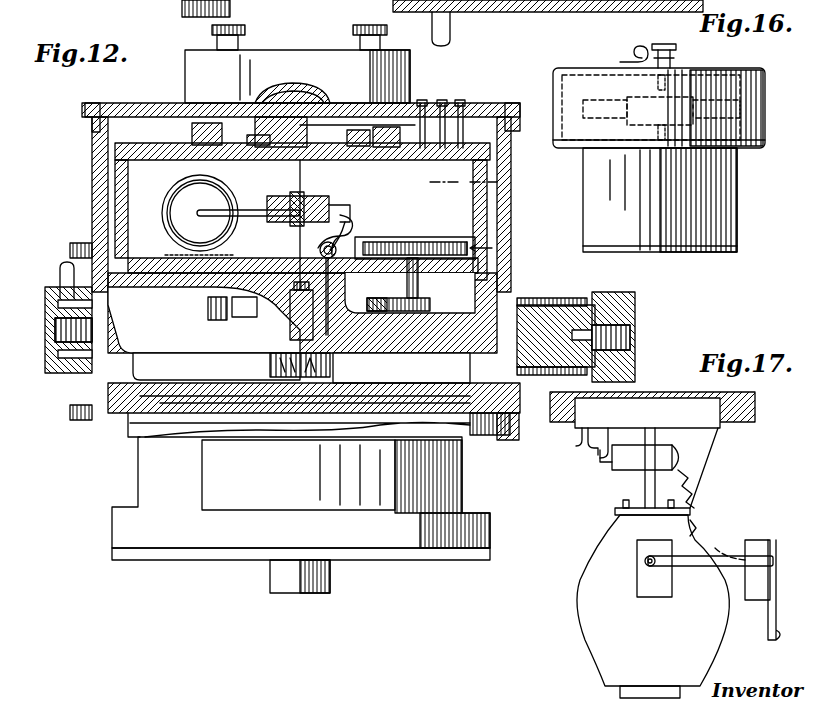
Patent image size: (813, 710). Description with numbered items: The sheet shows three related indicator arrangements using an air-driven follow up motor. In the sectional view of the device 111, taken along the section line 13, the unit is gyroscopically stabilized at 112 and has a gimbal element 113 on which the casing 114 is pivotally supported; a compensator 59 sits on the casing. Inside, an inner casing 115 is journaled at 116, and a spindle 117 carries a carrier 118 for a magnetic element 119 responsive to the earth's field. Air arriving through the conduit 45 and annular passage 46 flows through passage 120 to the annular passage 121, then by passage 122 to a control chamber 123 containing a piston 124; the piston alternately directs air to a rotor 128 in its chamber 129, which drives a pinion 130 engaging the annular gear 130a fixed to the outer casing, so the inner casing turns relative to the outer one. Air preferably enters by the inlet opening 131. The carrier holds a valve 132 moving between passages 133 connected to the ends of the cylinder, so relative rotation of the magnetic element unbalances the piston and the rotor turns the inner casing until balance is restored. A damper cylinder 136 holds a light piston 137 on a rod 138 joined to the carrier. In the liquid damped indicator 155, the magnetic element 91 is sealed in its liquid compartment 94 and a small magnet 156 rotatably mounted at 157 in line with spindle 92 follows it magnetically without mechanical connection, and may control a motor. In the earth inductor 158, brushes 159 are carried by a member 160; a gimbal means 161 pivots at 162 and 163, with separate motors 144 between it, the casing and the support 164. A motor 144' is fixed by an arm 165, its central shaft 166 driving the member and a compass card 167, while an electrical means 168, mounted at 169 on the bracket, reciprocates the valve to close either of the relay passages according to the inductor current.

In FIG. 12, the section line 13 is at (600, 182).
In FIG. 12, the conduit 45 is at (60, 270).
In FIG. 12, the annular passage 46 is at (68, 362).
In FIG. 12, the compensator 59 is at (179, 84).
In FIG. 16, the magnetic element 91 is at (590, 100).
In FIG. 16, the spindle 92 is at (660, 135).
In FIG. 16, the liquid compartment 94 is at (640, 98).
In FIG. 12, the device 111 is at (97, 95).
In FIG. 12, the gyroscopic stabilizer 112 is at (125, 481).
In FIG. 12, the gimbal element 113 is at (636, 303).
In FIG. 12, the casing 114 is at (490, 170).
In FIG. 12, the inner casing 115 is at (108, 208).
In FIG. 12, the journal axis 116 is at (262, 288).
In FIG. 12, the spindle 117 is at (303, 177).
In FIG. 12, the carrier 118 is at (352, 192).
In FIG. 12, the magnetic element 119 is at (278, 196).
In FIG. 12, the passage 120 is at (231, 366).
In FIG. 12, the annular passage 121 is at (330, 353).
In FIG. 12, the passage 122 is at (410, 293).
In FIG. 12, the chamber 123 is at (345, 232).
In FIG. 12, the piston 124 is at (318, 246).
In FIG. 12, the rotor 128 is at (410, 237).
In FIG. 12, the chamber 129 is at (470, 242).
In FIG. 12, the pinion 130 is at (432, 304).
In FIG. 12, the annular gear 130a is at (200, 310).
In FIG. 12, the inlet opening 131 is at (512, 282).
In FIG. 12, the valve 132 is at (349, 210).
In FIG. 16, the valve 132 is at (644, 46).
In FIG. 17, the valve 132 is at (600, 458).
In FIG. 12, the passages 133 is at (345, 214).
In FIG. 16, the passages 133 is at (626, 54).
In FIG. 17, the passages 133 is at (577, 441).
In FIG. 12, the cylinder 136 is at (162, 208).
In FIG. 12, the piston 137 is at (186, 196).
In FIG. 12, the rod 138 is at (245, 208).
In FIG. 17, the motor 144 is at (691, 583).
In FIG. 17, the motor 144' is at (647, 398).
In FIG. 16, the indicator 155 is at (543, 90).
In FIG. 16, the magnet 156 is at (662, 44).
In FIG. 16, the mounting 157 is at (675, 52).
In FIG. 17, the earth inductor 158 is at (580, 645).
In FIG. 17, the brushes 159 is at (628, 470).
In FIG. 17, the member 160 is at (620, 514).
In FIG. 17, the gimbal means 161 is at (690, 565).
In FIG. 17, the pivot 162 is at (643, 562).
In FIG. 17, the pivot 163 is at (750, 558).
In FIG. 17, the support 164 is at (776, 640).
In FIG. 17, the arm 165 is at (720, 438).
In FIG. 17, the central shaft 166 is at (657, 436).
In FIG. 17, the compass card 167 is at (560, 422).
In FIG. 17, the electrical means 168 is at (612, 443).
In FIG. 17, the mounting 169 is at (700, 488).